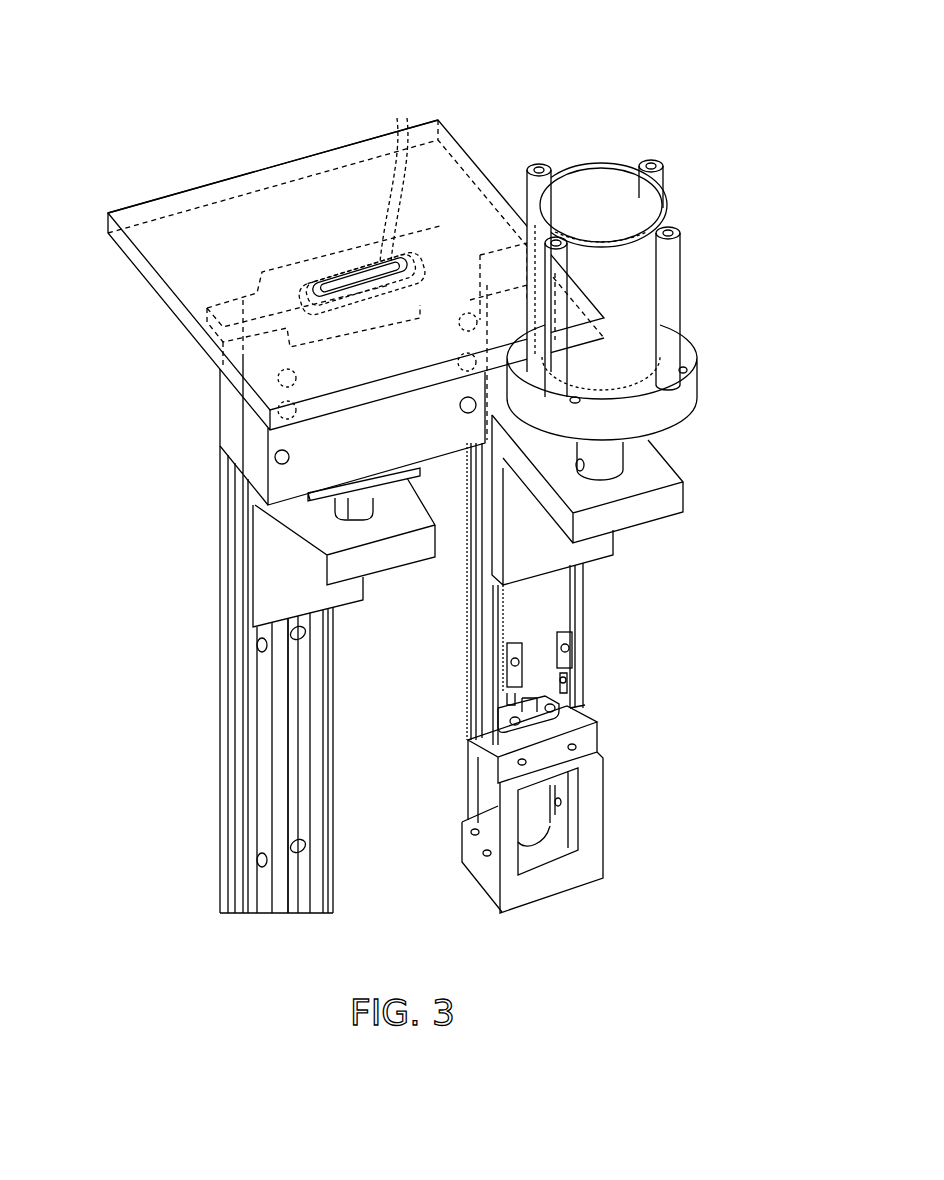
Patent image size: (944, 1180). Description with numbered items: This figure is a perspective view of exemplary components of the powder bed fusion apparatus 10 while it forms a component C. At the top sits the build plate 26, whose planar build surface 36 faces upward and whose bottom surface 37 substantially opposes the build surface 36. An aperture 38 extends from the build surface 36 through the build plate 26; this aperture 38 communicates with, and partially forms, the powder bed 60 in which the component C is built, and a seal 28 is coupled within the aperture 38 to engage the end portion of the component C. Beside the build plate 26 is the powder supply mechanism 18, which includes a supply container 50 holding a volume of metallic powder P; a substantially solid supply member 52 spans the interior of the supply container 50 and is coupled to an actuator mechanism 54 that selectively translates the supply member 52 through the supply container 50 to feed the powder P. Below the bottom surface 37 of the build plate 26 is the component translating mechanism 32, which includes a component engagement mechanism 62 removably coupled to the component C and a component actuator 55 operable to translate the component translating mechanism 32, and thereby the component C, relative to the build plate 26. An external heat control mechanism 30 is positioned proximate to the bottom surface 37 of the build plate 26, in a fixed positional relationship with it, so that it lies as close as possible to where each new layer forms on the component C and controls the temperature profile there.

The powder bed fusion apparatus 10 is at (240, 76).
The powder supply mechanism 18 is at (672, 192).
The build plate 26 is at (333, 120).
The seal 28 is at (404, 118).
The external heat control mechanism 30 is at (275, 280).
The component translating mechanism 32 is at (216, 728).
The build surface 36 is at (180, 238).
The bottom surface 37 is at (130, 262).
The aperture 38 is at (365, 262).
The supply container 50 is at (630, 292).
The supply member 52 is at (600, 232).
The actuator mechanism 54 is at (540, 700).
The component actuator 55 is at (280, 769).
The powder bed 60 is at (340, 272).
The component engagement mechanism 62 is at (385, 580).
The component C is at (410, 500).
The metallic powder P is at (617, 182).